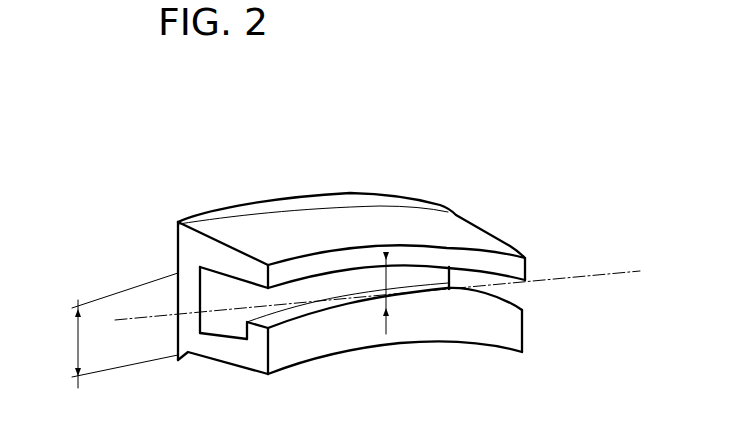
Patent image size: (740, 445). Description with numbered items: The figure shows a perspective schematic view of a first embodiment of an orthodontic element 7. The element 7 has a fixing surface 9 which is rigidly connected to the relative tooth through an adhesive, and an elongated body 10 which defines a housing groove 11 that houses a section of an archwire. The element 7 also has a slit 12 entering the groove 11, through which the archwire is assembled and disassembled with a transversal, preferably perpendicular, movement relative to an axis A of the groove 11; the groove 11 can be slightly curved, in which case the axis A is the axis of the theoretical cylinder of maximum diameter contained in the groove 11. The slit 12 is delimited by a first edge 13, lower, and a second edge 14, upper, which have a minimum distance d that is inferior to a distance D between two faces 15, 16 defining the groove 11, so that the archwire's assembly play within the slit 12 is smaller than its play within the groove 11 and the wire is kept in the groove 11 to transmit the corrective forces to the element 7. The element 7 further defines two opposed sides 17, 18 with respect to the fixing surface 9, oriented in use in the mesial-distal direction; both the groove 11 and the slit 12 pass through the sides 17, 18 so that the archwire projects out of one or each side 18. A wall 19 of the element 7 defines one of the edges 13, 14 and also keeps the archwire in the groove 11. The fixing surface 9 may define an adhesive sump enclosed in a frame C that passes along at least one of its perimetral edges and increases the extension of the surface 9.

The element 7 is at (428, 215).
The fixing surface 9 is at (168, 257).
The elongated body 10 is at (174, 298).
The housing groove 11 is at (219, 330).
The slit 12 is at (482, 286).
The first edge 13 is at (278, 320).
The second edge 14 is at (338, 295).
The face 15 is at (181, 352).
The face 16 is at (230, 290).
The side 17 is at (535, 330).
The side 18 is at (190, 248).
The wall 19 is at (416, 328).
The axis A is at (606, 272).
The frame C is at (268, 198).
The minimum distance d is at (386, 254).
The distance D is at (118, 330).